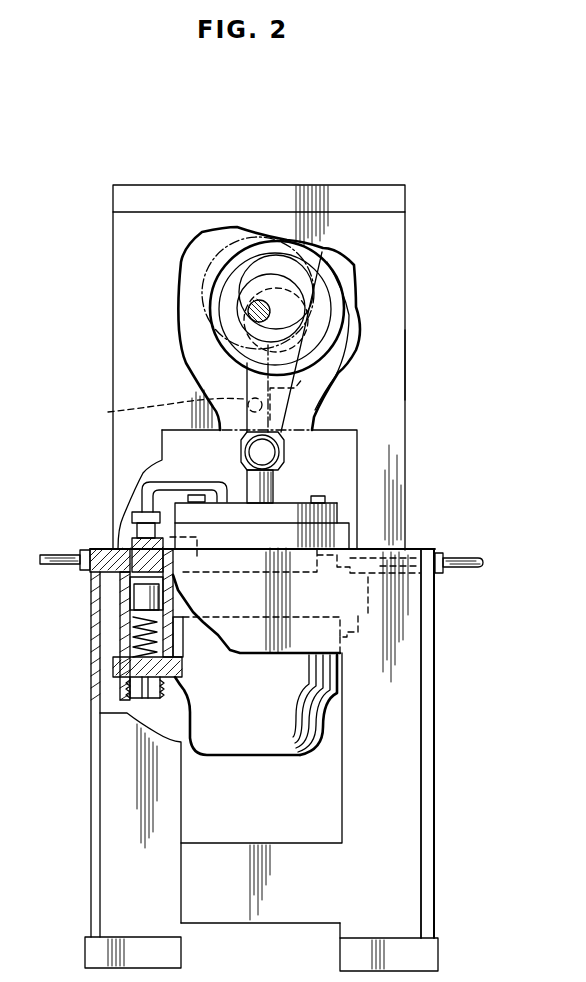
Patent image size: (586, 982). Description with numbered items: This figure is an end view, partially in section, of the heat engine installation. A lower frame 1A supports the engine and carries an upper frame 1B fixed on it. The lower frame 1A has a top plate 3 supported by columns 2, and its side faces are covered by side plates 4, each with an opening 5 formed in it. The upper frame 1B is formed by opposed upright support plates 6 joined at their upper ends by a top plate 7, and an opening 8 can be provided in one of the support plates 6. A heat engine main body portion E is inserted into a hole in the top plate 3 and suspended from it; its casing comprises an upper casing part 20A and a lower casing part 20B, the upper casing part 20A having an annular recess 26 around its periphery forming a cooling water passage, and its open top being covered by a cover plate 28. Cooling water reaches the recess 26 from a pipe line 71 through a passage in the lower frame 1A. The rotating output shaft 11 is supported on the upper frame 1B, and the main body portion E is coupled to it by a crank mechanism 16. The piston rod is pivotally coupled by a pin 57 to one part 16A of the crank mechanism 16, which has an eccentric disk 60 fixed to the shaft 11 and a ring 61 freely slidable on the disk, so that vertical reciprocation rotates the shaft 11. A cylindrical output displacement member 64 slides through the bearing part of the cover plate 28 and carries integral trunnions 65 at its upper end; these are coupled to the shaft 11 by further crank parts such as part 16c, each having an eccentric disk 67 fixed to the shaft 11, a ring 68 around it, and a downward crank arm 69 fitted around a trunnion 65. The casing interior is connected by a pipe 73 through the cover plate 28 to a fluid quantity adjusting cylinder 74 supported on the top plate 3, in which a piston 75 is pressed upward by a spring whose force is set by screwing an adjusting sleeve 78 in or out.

The lower frame 1A is at (113, 799).
The upper frame 1B is at (392, 323).
The columns 2 is at (110, 633).
The top plate 3 is at (108, 550).
The side plates 4 is at (93, 882).
The opening 5 is at (336, 795).
The upright support plates 6 is at (395, 362).
The top plate 7 is at (305, 193).
The opening 8 is at (352, 456).
The rotating output shaft 11 is at (258, 300).
The crank mechanism 16 is at (286, 434).
The crank mechanism part 16A is at (205, 336).
The crank mechanism part 16c is at (323, 262).
The upper casing part 20A is at (327, 542).
The lower casing part 20B is at (293, 733).
The annular recess 26 is at (326, 577).
The cover plate 28 is at (305, 507).
The pin 57 is at (161, 412).
The eccentric disk 60 is at (238, 345).
The ring 61 is at (230, 365).
The output displacement member 64 is at (248, 480).
The trunnions 65 is at (243, 452).
The eccentric disk 67 is at (328, 288).
The ring 68 is at (340, 303).
The crank arm 69 is at (287, 398).
The pipe line 71 is at (52, 553).
The pipe 73 is at (140, 485).
The fluid quantity adjusting cylinder 74 is at (123, 645).
The piston 75 is at (137, 600).
The adjusting sleeve 78 is at (123, 693).
The heat engine main body portion E is at (233, 748).